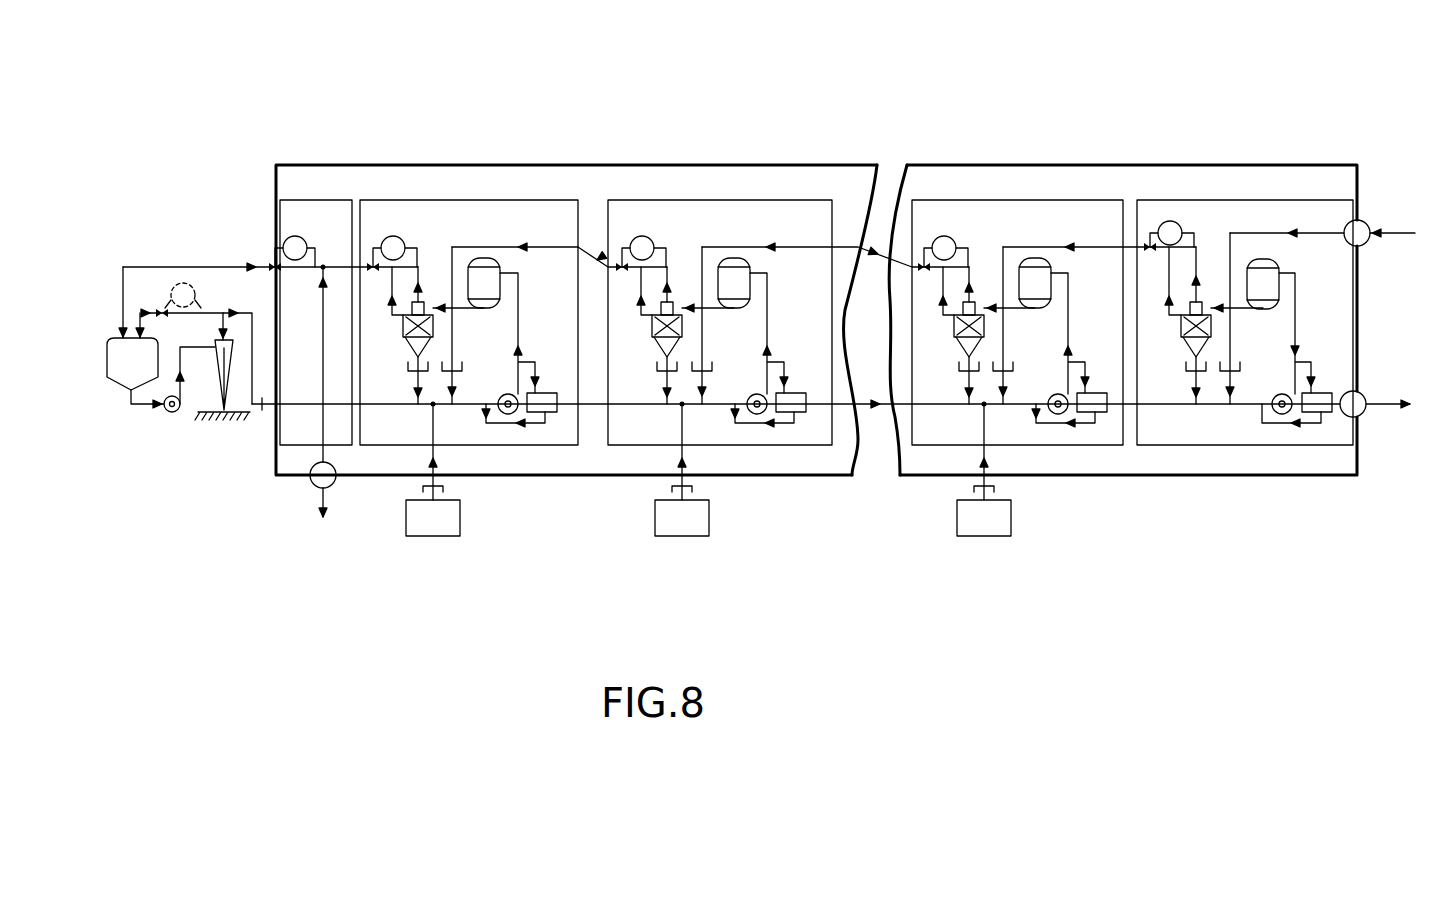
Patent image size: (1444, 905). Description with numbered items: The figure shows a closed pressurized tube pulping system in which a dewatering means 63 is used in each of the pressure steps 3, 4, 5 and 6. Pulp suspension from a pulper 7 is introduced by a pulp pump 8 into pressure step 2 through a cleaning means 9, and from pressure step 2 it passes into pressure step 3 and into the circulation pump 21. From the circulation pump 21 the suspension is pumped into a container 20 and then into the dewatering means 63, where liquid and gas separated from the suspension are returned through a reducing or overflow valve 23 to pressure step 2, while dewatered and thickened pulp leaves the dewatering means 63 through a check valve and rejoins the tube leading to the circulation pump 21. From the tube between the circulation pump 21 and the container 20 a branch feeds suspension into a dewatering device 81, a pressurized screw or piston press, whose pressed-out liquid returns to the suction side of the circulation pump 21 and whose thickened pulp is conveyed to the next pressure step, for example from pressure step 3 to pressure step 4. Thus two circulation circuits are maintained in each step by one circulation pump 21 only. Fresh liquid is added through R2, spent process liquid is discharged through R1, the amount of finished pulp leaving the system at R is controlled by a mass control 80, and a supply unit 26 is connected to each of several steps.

The pressure step 2 is at (287, 200).
The pressure step 3 is at (463, 200).
The pressure step 4 is at (705, 200).
The pressure step 5 is at (995, 200).
The pressure step 6 is at (1235, 200).
The pulper 7 is at (120, 375).
The pulp pump 8 is at (178, 412).
The cleaning means 9 is at (232, 365).
The container 20 is at (484, 258).
The circulation pump 21 is at (509, 414).
The reducing or overflow valve 23 is at (283, 242).
The fresh liquid supply unit 26 is at (448, 535).
The dewatering means 63 is at (405, 320).
The mass control 80 is at (1360, 417).
The dewatering device 81 is at (553, 412).
The spent process liquid discharge R1 is at (312, 486).
The fresh liquid supply R2 is at (1366, 224).
The outlet line R is at (1362, 394).